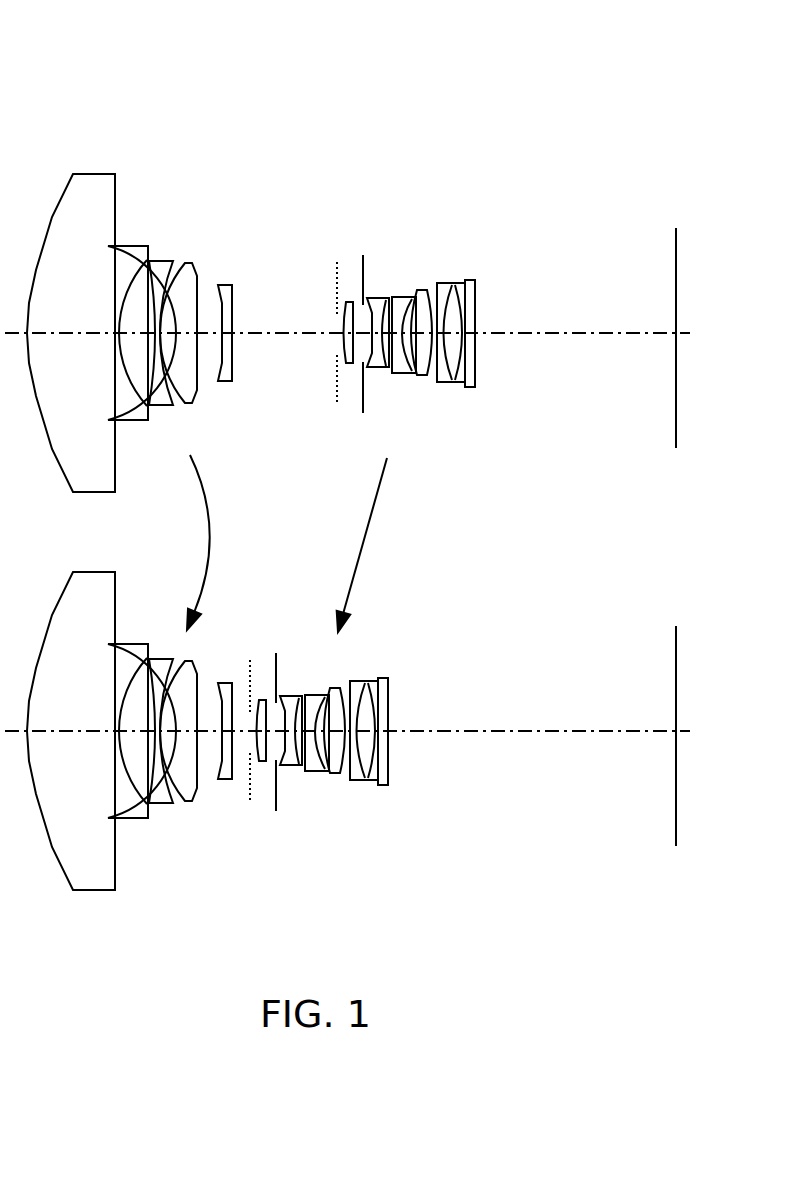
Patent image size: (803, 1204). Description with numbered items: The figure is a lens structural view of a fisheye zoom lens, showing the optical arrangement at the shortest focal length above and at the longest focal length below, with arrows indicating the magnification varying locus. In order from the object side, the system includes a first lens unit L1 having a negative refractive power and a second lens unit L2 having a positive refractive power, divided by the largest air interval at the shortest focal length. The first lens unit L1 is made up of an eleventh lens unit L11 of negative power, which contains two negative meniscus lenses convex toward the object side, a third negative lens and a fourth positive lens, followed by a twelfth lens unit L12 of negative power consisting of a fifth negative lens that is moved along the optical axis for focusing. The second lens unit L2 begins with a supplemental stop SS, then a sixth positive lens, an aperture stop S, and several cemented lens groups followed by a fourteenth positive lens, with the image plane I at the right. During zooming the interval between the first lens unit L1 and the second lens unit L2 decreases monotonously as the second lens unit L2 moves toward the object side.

The first lens unit L1 is at (145, 461).
The eleventh lens unit L11 is at (115, 496).
The twelfth lens unit L12 is at (231, 440).
The second lens unit L2 is at (370, 430).
The supplemental stop SS is at (294, 482).
The aperture stop S is at (347, 487).
The image plane I is at (667, 212).